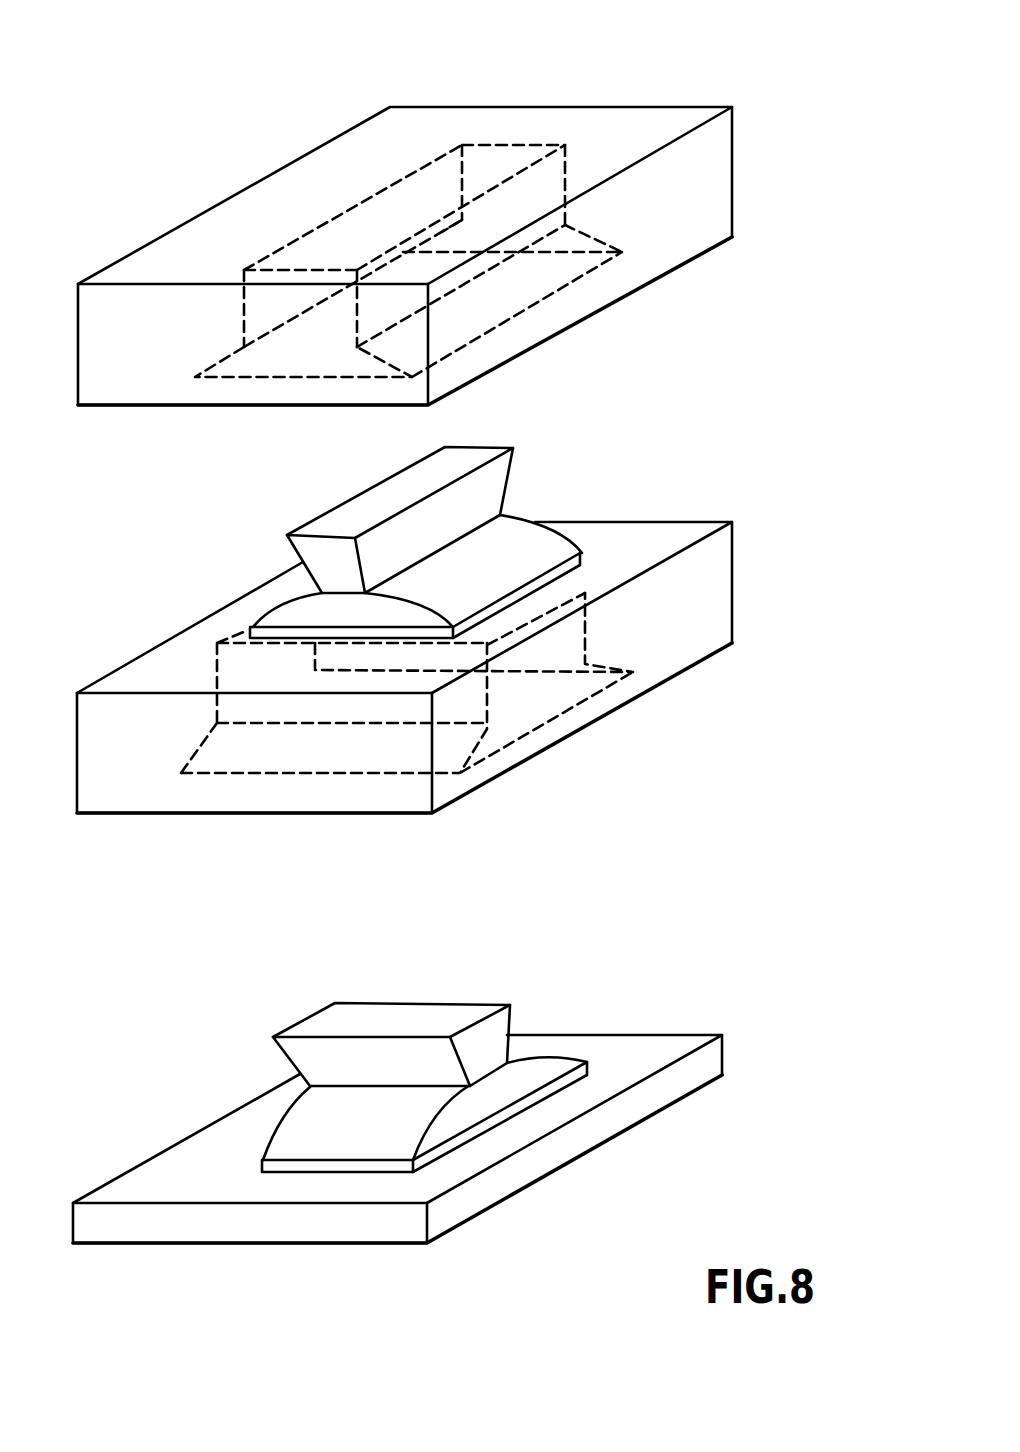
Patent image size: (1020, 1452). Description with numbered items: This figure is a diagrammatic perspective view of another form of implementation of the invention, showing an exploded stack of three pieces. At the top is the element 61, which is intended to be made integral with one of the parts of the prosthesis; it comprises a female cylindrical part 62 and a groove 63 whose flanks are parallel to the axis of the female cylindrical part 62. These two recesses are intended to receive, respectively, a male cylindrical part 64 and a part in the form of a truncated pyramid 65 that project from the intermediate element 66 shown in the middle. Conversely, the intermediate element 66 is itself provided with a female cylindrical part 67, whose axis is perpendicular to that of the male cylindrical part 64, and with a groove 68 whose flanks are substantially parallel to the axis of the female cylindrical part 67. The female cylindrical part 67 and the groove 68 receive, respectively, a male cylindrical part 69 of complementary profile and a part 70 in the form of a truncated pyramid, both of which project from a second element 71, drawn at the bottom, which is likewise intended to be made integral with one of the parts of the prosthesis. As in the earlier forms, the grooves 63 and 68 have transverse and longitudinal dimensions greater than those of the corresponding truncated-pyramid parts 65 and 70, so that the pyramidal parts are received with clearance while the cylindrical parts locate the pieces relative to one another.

The element 61 is at (657, 110).
The female cylindrical part 62 is at (388, 345).
The groove 63 is at (250, 307).
The male cylindrical part 64 is at (534, 539).
The part in the form of a truncated pyramid 65 is at (505, 467).
The intermediate element 66 is at (662, 681).
The female cylindrical part 67 is at (205, 728).
The groove 68 is at (499, 698).
The male cylindrical part 69 is at (540, 1056).
The part in the form of a truncated pyramid 70 is at (443, 994).
The second element 71 is at (325, 1242).